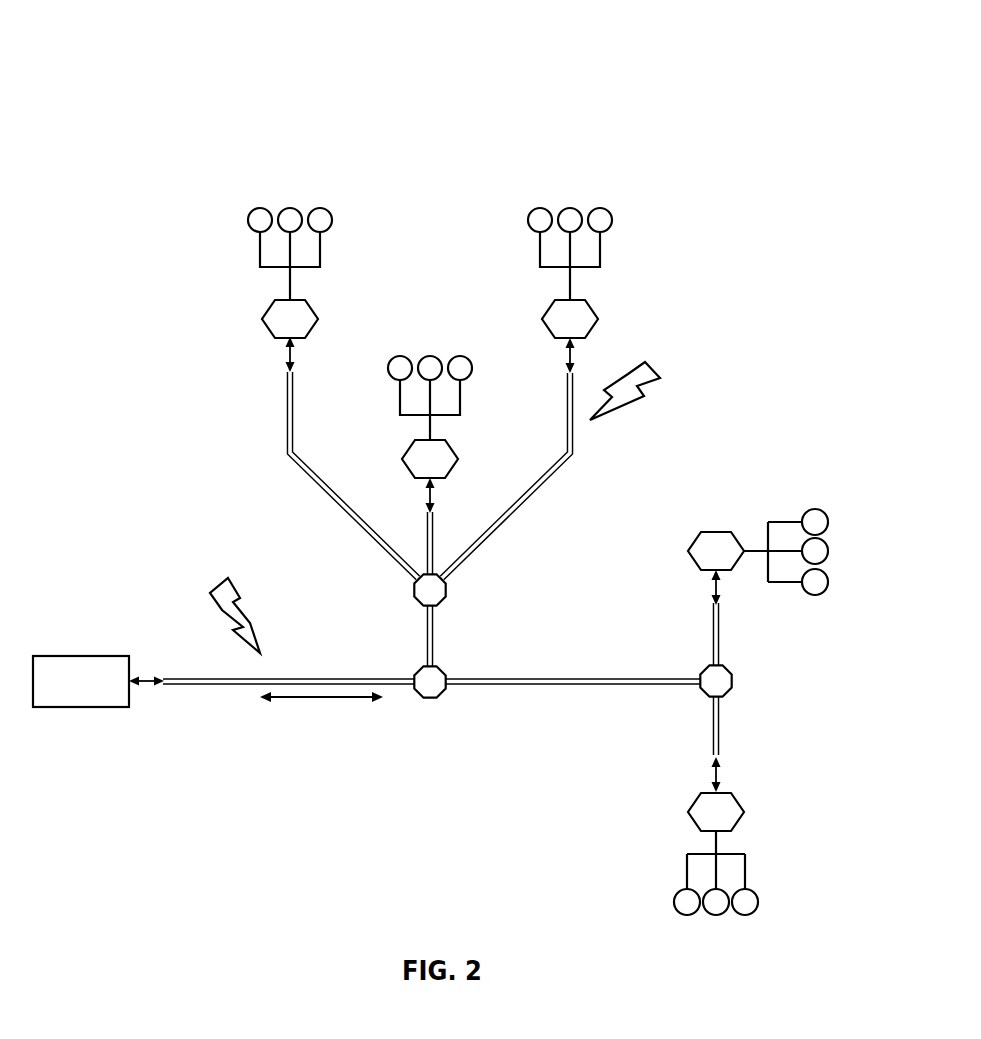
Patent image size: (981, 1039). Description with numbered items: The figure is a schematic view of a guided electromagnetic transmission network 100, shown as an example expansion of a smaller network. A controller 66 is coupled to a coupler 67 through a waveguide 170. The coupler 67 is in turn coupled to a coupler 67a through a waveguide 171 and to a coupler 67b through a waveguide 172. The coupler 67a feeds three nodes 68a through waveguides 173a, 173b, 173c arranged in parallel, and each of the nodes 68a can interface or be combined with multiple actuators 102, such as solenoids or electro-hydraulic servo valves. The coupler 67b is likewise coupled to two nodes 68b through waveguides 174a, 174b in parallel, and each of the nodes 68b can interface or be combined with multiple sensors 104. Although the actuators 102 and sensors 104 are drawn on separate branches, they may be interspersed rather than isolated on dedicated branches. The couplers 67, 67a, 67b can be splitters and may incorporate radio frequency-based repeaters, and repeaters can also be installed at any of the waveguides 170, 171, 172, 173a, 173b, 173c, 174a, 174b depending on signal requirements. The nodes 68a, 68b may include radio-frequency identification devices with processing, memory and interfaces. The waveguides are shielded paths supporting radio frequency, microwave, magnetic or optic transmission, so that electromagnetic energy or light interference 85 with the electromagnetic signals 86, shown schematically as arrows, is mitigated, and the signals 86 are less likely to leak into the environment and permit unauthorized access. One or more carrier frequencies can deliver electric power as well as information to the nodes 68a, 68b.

The guided electromagnetic transmission network 100 is at (270, 55).
The actuators 102 is at (320, 207).
The nodes 68a is at (318, 318).
The electromagnetic energy or light interference 85 is at (660, 367).
The waveguide 173a is at (287, 415).
The waveguide 173b is at (427, 545).
The waveguide 173c is at (528, 507).
The coupler 67a is at (446, 592).
The waveguide 171 is at (427, 640).
The coupler 67 is at (428, 700).
The waveguide 170 is at (210, 686).
The controller 66 is at (95, 700).
The electromagnetic signals 86 is at (318, 702).
The waveguide 172 is at (566, 686).
The coupler 67b is at (732, 683).
The waveguide 174a is at (713, 630).
The waveguide 174b is at (713, 728).
The nodes 68b is at (724, 532).
The sensors 104 is at (828, 520).